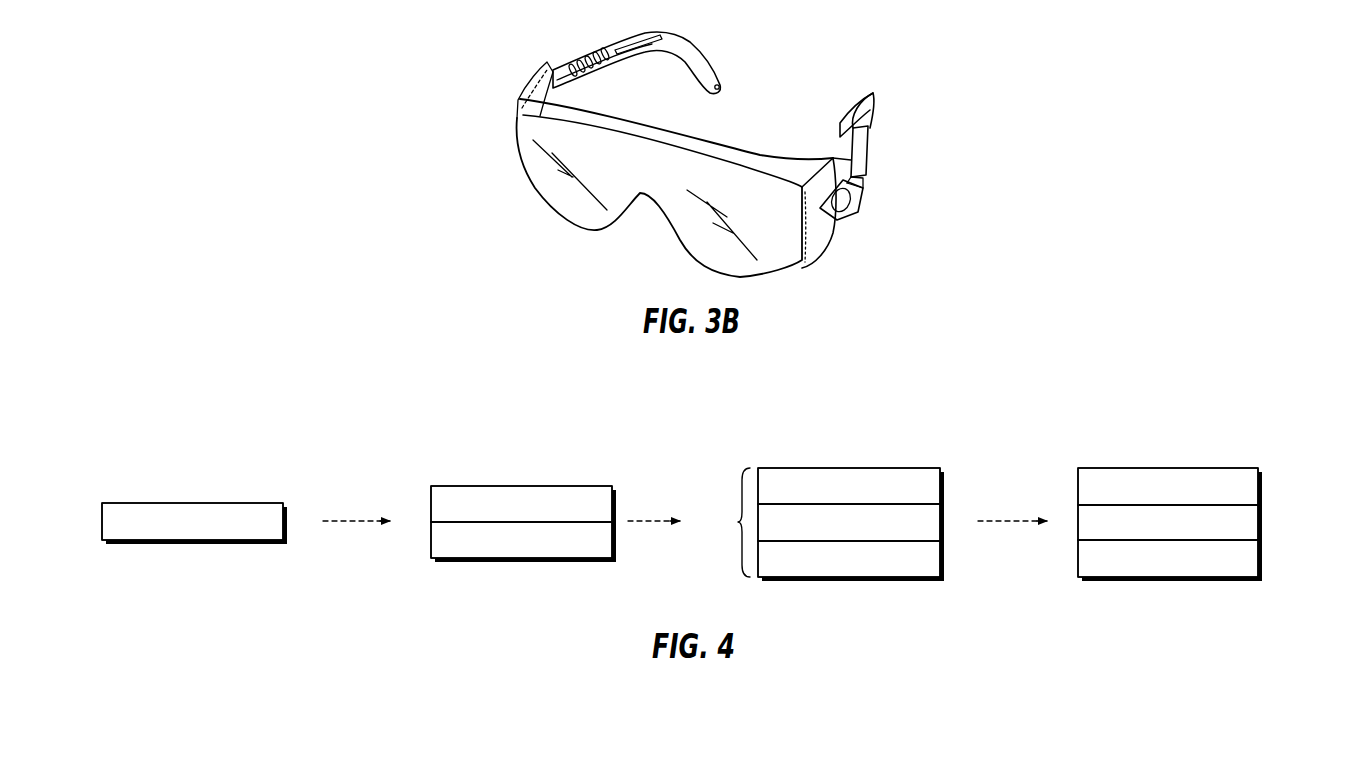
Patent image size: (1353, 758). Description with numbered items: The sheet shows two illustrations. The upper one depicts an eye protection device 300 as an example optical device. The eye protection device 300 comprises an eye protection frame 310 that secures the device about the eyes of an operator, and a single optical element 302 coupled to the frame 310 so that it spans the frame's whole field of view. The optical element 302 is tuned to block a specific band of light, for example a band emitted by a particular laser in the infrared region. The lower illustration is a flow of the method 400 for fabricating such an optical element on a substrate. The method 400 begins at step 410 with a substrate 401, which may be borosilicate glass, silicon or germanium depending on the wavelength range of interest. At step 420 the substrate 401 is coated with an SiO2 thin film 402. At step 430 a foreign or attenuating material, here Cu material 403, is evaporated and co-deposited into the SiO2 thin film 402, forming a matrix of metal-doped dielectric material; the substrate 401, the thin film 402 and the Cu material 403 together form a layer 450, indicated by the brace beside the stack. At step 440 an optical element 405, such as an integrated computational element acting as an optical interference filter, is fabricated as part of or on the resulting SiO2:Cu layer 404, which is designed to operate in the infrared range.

In FIG. 3B, the eye protection device 300 is at (555, 55).
In FIG. 3B, the optical element 302 is at (700, 253).
In FIG. 3B, the eye protection frame 310 is at (853, 200).
In FIG. 4, the method 400 is at (175, 405).
In FIG. 4, the substrate 401 is at (128, 503).
In FIG. 4, the SiO2 thin film 402 is at (453, 560).
In FIG. 4, the Cu material 403 is at (933, 562).
In FIG. 4, the SiO2:Cu layer 404 is at (1253, 515).
In FIG. 4, the optical element 405 is at (1253, 562).
In FIG. 4, the step 410 is at (230, 463).
In FIG. 4, the step 420 is at (563, 445).
In FIG. 4, the step 430 is at (897, 428).
In FIG. 4, the step 440 is at (1218, 428).
In FIG. 4, the layer 450 is at (721, 522).